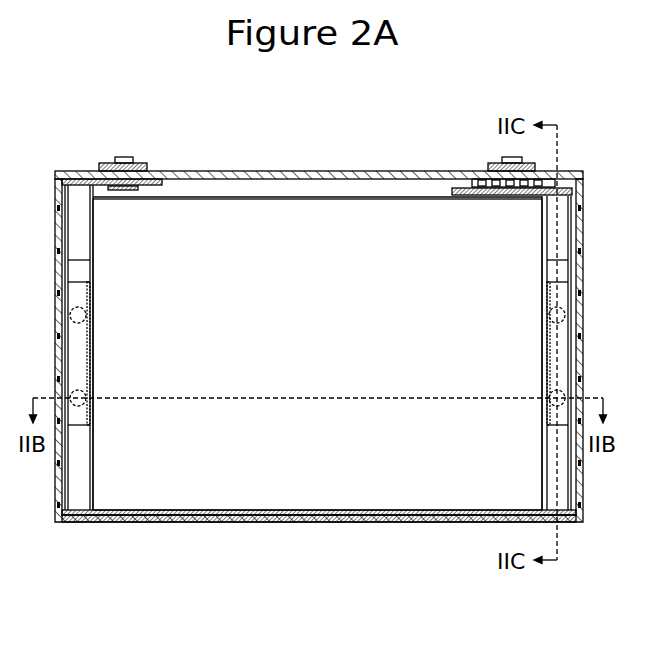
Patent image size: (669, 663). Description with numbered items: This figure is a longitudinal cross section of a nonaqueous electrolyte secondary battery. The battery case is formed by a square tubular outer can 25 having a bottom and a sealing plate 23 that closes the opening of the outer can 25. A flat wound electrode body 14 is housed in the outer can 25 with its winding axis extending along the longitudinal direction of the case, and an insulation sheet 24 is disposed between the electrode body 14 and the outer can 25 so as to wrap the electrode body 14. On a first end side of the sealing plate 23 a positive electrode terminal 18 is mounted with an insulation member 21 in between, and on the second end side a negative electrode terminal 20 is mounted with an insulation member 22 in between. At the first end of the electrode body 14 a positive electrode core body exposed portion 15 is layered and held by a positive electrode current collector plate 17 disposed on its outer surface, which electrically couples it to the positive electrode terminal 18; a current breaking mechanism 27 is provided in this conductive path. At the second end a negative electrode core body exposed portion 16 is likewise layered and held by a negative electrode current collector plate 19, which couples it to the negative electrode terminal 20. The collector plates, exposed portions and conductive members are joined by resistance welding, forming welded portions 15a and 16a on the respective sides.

The electrode body 14 is at (336, 478).
The positive electrode core body exposed portion 15 is at (573, 483).
The welded portion 15a is at (552, 395).
The negative electrode core body exposed portion 16 is at (75, 493).
The welded portion 16a is at (89, 330).
The positive electrode current collector plate 17 is at (563, 242).
The positive electrode terminal 18 is at (502, 162).
The negative electrode current collector plate 19 is at (70, 293).
The negative electrode terminal 20 is at (123, 157).
The insulation member 21 is at (495, 175).
The insulation member 22 is at (150, 168).
The sealing plate 23 is at (357, 178).
The insulation sheet 24 is at (401, 522).
The outer can 25 is at (478, 522).
The current breaking mechanism 27 is at (500, 195).